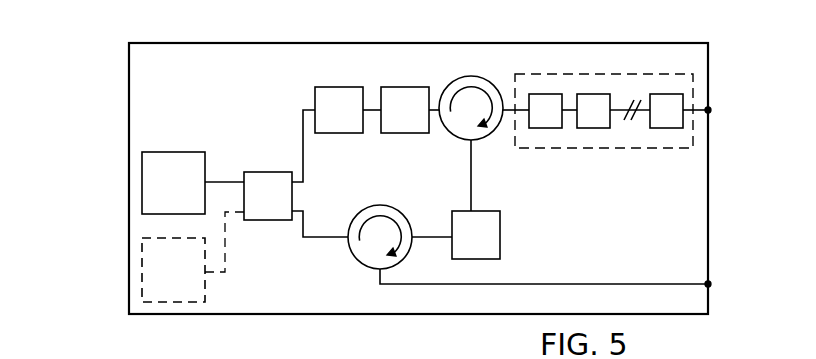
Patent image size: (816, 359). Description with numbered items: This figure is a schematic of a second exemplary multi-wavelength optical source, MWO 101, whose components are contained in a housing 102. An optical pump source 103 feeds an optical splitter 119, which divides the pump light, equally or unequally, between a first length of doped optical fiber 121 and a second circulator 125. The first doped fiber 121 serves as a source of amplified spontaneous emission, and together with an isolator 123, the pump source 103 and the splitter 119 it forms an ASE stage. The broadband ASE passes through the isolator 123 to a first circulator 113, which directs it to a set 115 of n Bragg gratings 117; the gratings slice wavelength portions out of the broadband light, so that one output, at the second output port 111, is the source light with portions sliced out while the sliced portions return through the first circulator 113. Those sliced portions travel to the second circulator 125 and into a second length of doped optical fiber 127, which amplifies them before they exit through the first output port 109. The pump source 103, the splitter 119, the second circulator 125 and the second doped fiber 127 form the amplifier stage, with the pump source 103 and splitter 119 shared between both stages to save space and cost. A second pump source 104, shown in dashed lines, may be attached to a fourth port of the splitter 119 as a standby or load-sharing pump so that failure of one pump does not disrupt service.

The multi-wavelength optical source (MWO) 101 is at (95, 68).
The housing 102 is at (185, 43).
The optical pump source 103 is at (192, 194).
The second pump source 104 is at (192, 280).
The first output port 109 is at (710, 284).
The second output port 111 is at (709, 110).
The first circulator 113 is at (488, 119).
The set of Bragg gratings 115 is at (672, 73).
The Bragg gratings 117 is at (657, 94).
The optical splitter 119 is at (287, 206).
The first length of doped optical fiber 121 is at (358, 120).
The isolator 123 is at (424, 120).
The second circulator 125 is at (397, 248).
The second length of doped optical fiber 127 is at (495, 245).